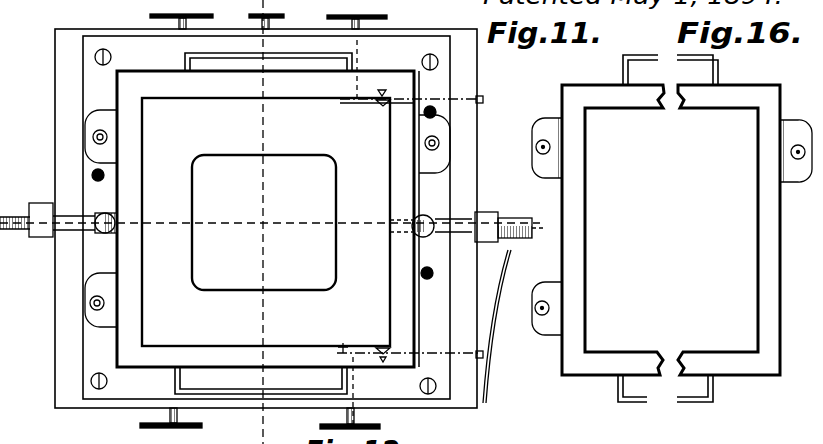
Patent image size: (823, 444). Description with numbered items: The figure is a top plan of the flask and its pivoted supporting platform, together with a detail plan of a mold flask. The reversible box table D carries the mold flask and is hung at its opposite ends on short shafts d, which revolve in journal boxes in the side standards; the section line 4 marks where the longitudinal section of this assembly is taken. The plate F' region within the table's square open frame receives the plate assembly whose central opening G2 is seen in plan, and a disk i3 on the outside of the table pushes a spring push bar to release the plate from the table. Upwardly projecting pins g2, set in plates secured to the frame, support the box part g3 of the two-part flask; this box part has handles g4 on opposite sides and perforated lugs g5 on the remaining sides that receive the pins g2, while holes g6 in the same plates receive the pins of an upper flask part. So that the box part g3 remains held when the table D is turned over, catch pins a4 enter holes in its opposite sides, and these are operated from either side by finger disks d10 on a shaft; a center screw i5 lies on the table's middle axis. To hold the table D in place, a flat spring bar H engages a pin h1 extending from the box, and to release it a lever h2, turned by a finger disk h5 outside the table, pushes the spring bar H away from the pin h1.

In FIG. 11, the reversible box table D is at (460, 398).
In FIG. 11, the mounting plate F' is at (266, 217).
In FIG. 11, the box part of flask g3 is at (232, 100).
In FIG. 16, the box part of flask g3 is at (585, 222).
In FIG. 11, the central opening G2 is at (264, 222).
In FIG. 11, the disk i3 is at (285, 222).
In FIG. 11, the short shafts d is at (19, 210).
In FIG. 11, the section line 4 is at (543, 229).
In FIG. 11, the catch pins a4 is at (101, 236).
In FIG. 11, the perforated lugs g5 is at (95, 118).
In FIG. 16, the perforated lugs g5 is at (795, 176).
In FIG. 11, the upwardly projecting pins g2 is at (93, 135).
In FIG. 16, the upwardly projecting pins g2 is at (670, 227).
In FIG. 11, the holes g6 is at (98, 182).
In FIG. 11, the handles g4 is at (184, 60).
In FIG. 16, the handles g4 is at (623, 65).
In FIG. 11, the finger disk d10 is at (150, 16).
In FIG. 11, the center screw i5 is at (266, 14).
In FIG. 11, the finger disk h5 is at (387, 18).
In FIG. 11, the pin h1 is at (483, 98).
In FIG. 11, the lever h2 is at (430, 340).
In FIG. 11, the flat spring bar H is at (508, 322).